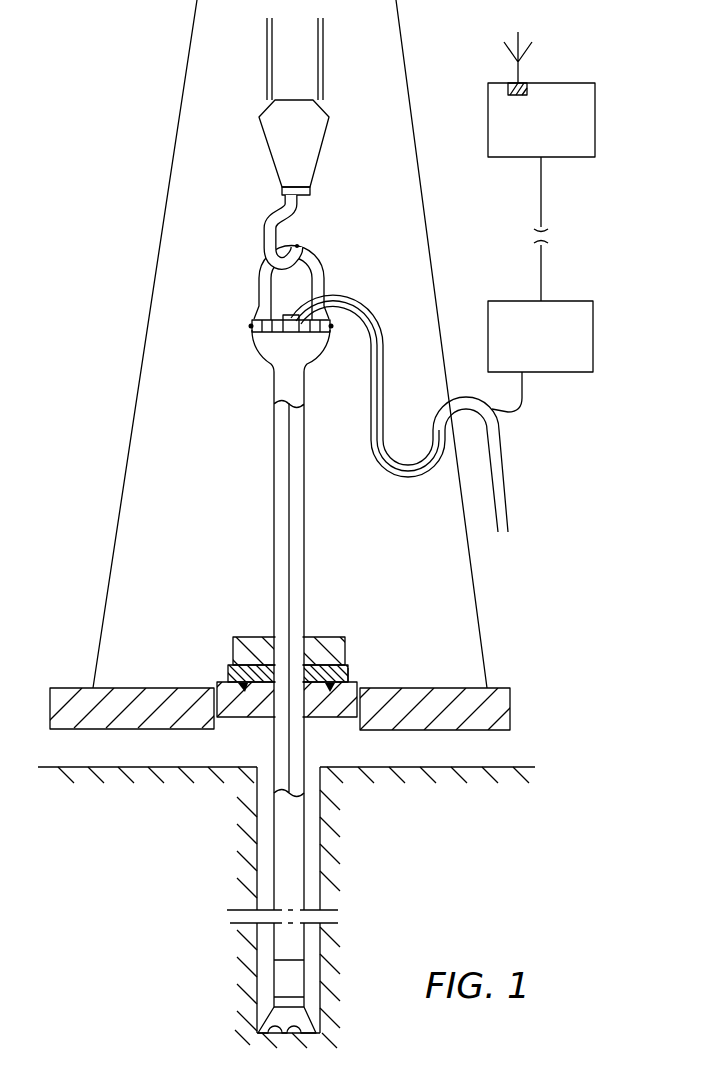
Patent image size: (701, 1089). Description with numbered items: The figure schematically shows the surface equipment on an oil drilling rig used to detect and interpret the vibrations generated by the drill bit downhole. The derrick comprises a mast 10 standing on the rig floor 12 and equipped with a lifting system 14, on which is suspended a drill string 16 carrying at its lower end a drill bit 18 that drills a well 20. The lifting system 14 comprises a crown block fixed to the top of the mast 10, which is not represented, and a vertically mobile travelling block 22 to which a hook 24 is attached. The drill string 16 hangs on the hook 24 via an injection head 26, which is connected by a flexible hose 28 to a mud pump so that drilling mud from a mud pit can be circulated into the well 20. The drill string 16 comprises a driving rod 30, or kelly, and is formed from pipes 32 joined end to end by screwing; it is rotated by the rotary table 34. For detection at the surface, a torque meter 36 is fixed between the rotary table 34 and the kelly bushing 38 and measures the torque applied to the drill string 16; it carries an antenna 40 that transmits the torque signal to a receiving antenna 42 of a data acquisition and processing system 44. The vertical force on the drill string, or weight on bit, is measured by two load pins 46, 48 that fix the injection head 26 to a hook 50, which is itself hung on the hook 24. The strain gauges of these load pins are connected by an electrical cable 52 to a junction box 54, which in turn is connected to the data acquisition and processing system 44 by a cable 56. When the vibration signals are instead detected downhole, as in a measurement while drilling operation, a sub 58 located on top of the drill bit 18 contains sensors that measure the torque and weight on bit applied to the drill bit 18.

The mast 10 is at (152, 258).
The rig floor 12 is at (74, 700).
The lifting system 14 is at (224, 54).
The drill string 16 is at (262, 849).
The drill bit 18 is at (278, 1017).
The well 20 is at (255, 943).
The travelling block 22 is at (278, 132).
The hook 24 is at (277, 210).
The injection head 26 is at (277, 340).
The flexible hose 28 is at (367, 323).
The driving rod 30 is at (302, 578).
The pipes 32 is at (285, 872).
The rotary table 34 is at (217, 687).
The torque meter 36 is at (227, 678).
The kelly bushing 38 is at (318, 648).
The antenna 40 is at (356, 671).
The receiving antenna 42 is at (535, 40).
The data acquisition and processing system 44 is at (528, 133).
The load pin 46 is at (250, 327).
The load pin 48 is at (333, 327).
The hook 50 is at (312, 265).
The electrical cable 52 is at (383, 423).
The junction box 54 is at (524, 345).
The cable 56 is at (543, 277).
The sub 58 is at (285, 980).